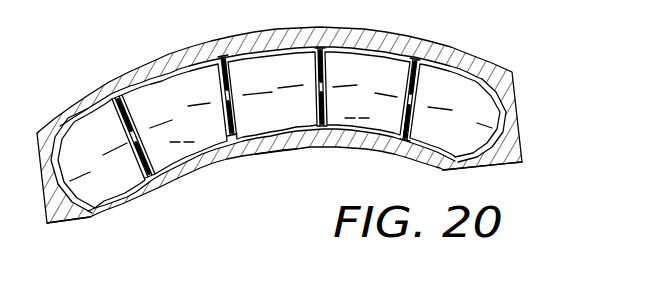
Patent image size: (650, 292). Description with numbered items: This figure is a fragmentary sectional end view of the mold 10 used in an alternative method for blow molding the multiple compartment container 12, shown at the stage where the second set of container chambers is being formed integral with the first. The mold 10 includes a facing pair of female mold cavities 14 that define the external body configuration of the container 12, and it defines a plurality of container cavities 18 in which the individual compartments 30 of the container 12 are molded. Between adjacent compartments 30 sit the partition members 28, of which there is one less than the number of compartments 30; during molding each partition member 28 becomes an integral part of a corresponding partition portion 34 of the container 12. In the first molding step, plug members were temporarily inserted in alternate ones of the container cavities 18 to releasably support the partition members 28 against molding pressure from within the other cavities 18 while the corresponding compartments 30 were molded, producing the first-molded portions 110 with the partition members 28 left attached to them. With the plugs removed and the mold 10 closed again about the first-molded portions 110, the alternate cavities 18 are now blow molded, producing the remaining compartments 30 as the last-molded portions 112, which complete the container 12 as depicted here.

The mold 10 is at (250, 197).
The multiple compartment container 12 is at (137, 199).
The female mold cavities 14 is at (518, 107).
The container cavities 18 is at (268, 119).
The partition member 28 is at (232, 46).
The compartments 30 is at (187, 111).
The partition portions 34 is at (312, 78).
The first-molded portions 110 is at (82, 219).
The last-molded portions 112 is at (199, 170).